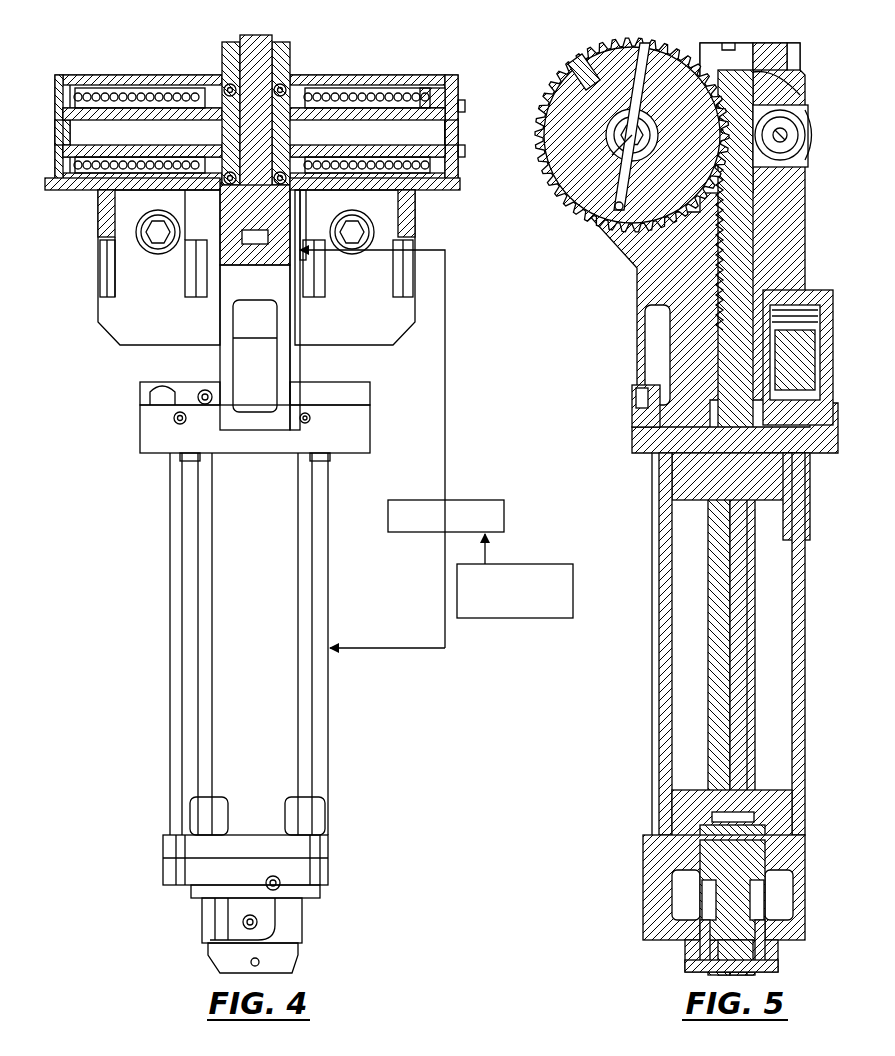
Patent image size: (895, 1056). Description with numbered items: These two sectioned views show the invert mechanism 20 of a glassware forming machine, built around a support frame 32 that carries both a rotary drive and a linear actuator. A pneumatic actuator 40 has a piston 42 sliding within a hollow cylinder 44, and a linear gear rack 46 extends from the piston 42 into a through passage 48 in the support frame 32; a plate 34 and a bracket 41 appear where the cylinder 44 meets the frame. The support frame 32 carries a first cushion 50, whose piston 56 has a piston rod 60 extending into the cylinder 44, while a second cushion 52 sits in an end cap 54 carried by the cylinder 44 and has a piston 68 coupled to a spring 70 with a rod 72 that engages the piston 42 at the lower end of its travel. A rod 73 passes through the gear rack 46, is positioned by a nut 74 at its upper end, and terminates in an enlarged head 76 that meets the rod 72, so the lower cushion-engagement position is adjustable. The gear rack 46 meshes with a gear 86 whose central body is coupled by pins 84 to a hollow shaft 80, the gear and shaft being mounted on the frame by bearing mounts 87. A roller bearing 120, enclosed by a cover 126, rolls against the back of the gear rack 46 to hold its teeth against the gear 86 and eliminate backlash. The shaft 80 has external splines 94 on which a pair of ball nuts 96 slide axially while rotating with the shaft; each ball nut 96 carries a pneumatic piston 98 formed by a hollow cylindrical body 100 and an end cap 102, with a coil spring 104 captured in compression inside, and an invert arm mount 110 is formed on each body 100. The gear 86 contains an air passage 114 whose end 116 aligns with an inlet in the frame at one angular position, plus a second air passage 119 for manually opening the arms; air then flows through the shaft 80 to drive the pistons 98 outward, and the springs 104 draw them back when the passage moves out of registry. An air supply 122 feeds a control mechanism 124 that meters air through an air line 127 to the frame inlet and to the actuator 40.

In FIG. 4, the tool assembly 20 is at (452, 38).
In FIG. 5, the tool assembly 20 is at (705, 35).
In FIG. 5, the support frame 32 is at (788, 43).
In FIG. 4, the mounting plate 34 is at (150, 422).
In FIG. 5, the mounting plate 34 is at (808, 432).
In FIG. 4, the pneumatic actuator 40 is at (150, 684).
In FIG. 5, the pneumatic actuator 40 is at (652, 712).
In FIG. 5, the bracket 41 is at (634, 428).
In FIG. 5, the piston 42 is at (770, 795).
In FIG. 4, the hollow cylinder 44 is at (173, 588).
In FIG. 5, the hollow cylinder 44 is at (800, 580).
In FIG. 5, the linear gear rack 46 is at (770, 216).
In FIG. 5, the through passage 48 is at (712, 322).
In FIG. 5, the first cushion 50 is at (828, 322).
In FIG. 5, the second cushion 52 is at (775, 895).
In FIG. 4, the end cap 54 is at (190, 880).
In FIG. 5, the end cap 54 is at (650, 880).
In FIG. 5, the piston 56 is at (812, 355).
In FIG. 5, the piston rod 60 is at (795, 472).
In FIG. 5, the piston 68 is at (710, 945).
In FIG. 5, the spring 70 is at (775, 948).
In FIG. 5, the rod 72 is at (740, 870).
In FIG. 5, the rod 73 is at (735, 752).
In FIG. 5, the nut 74 is at (780, 82).
In FIG. 5, the enlarged head 76 is at (750, 830).
In FIG. 4, the hollow shaft 80 is at (342, 108).
In FIG. 5, the hollow shaft 80 is at (605, 150).
In FIG. 4, the pins 84 is at (222, 131).
In FIG. 4, the gear 86 is at (256, 48).
In FIG. 5, the gear 86 is at (617, 60).
In FIG. 4, the bearing mounts 87 is at (232, 45).
In FIG. 4, the external splines 94 is at (150, 108).
In FIG. 4, the ball nuts 96 is at (85, 185).
In FIG. 4, the pneumatic piston 98 is at (120, 72).
In FIG. 4, the hollow cylindrical body 100 is at (440, 78).
In FIG. 4, the end cap 102 is at (56, 128).
In FIG. 4, the coil spring 104 is at (435, 95).
In FIG. 4, the invert arm mount 110 is at (120, 322).
In FIG. 5, the air passage 114 is at (618, 200).
In FIG. 5, the end of air passage 116 is at (618, 212).
In FIG. 5, the second air passage 119 is at (600, 96).
In FIG. 5, the roller bearing 120 is at (787, 125).
In FIG. 4, the air supply 122 is at (572, 568).
In FIG. 4, the control mechanism 124 is at (490, 500).
In FIG. 5, the cover 126 is at (812, 134).
In FIG. 4, the air line 127 is at (446, 398).